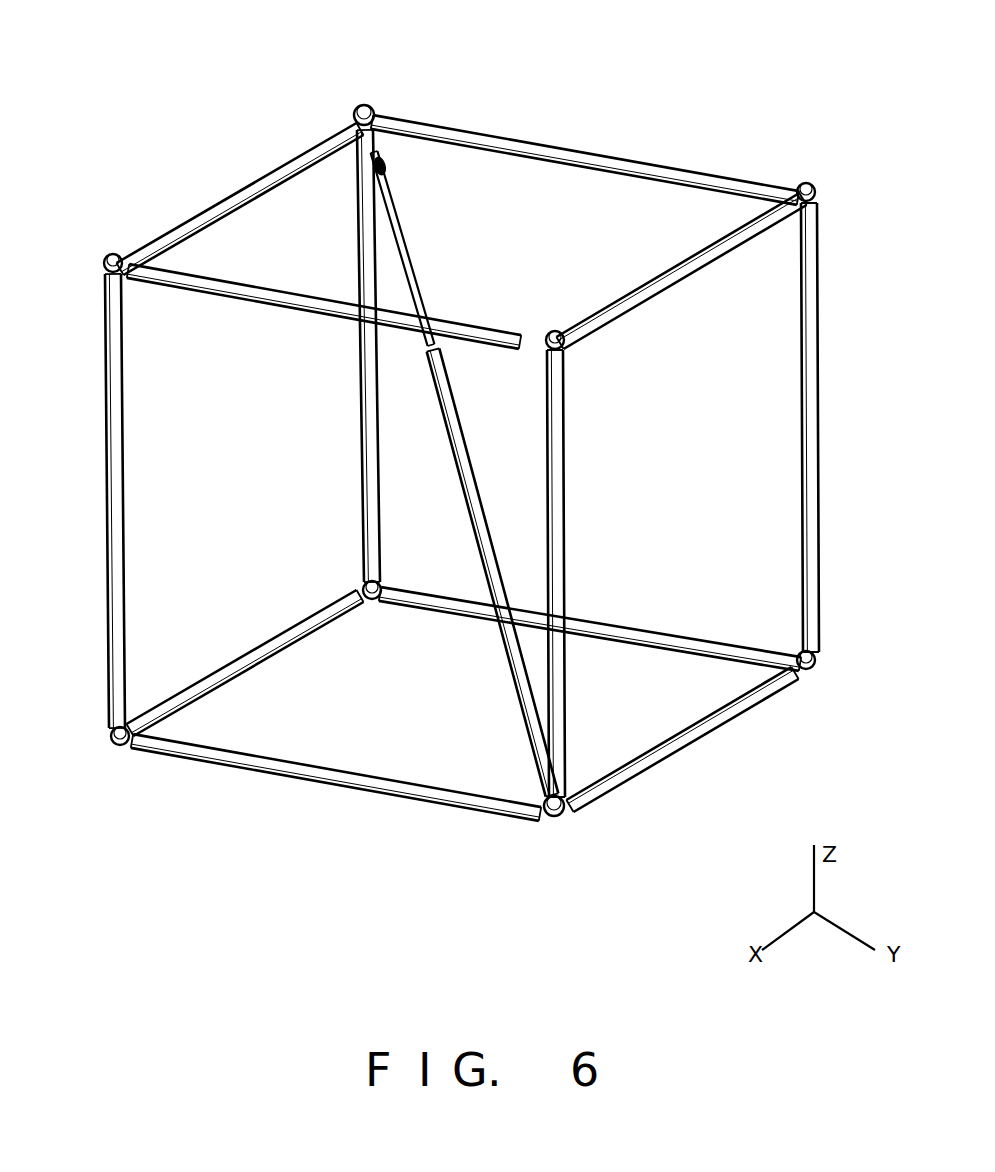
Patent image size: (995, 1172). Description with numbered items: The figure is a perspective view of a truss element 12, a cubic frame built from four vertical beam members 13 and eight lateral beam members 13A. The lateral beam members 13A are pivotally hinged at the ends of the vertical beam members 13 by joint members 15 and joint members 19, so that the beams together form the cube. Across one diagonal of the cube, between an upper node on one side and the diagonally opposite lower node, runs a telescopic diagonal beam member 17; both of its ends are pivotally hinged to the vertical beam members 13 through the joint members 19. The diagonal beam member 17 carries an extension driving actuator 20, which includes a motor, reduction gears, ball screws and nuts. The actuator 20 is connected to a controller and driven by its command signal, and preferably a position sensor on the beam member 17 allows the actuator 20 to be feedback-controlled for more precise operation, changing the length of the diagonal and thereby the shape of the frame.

The truss element 12 is at (562, 113).
The vertical beam member 13 is at (820, 378).
The lateral beam member 13A is at (270, 172).
The joint member 15 is at (816, 204).
The telescopic diagonal beam member 17 is at (462, 498).
The joint member 19 is at (370, 108).
The extension driving actuator 20 is at (387, 166).